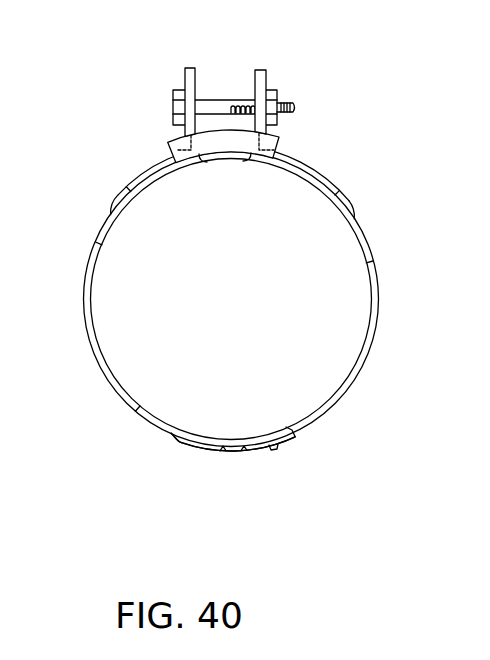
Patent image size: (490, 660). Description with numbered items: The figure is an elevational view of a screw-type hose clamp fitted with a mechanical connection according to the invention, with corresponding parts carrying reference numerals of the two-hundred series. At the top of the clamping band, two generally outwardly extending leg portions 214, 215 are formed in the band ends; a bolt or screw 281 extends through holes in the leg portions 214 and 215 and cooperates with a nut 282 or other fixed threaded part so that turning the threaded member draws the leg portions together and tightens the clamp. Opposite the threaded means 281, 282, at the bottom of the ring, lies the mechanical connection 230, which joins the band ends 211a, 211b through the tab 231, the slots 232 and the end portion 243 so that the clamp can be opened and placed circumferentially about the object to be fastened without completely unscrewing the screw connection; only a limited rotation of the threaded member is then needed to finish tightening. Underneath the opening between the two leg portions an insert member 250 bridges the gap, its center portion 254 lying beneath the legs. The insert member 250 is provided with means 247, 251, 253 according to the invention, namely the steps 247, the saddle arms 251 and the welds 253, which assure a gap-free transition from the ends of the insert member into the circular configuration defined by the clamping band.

The band end 211a is at (292, 436).
The band end 211b is at (210, 434).
The leg portion 214 is at (188, 74).
The leg portion 215 is at (264, 75).
The mechanical connection 230 is at (249, 457).
The tab 231 is at (273, 452).
The slots 232 is at (243, 449).
The band end portion 243 is at (148, 417).
The gap-free transition means 247 is at (117, 197).
The insert member 250 is at (222, 177).
The gap-free transition means 251 is at (143, 186).
The gap-free transition means 253 is at (102, 227).
The saddle center portion 254 is at (232, 160).
The bolt or screw 281 is at (208, 103).
The nut 282 is at (274, 98).